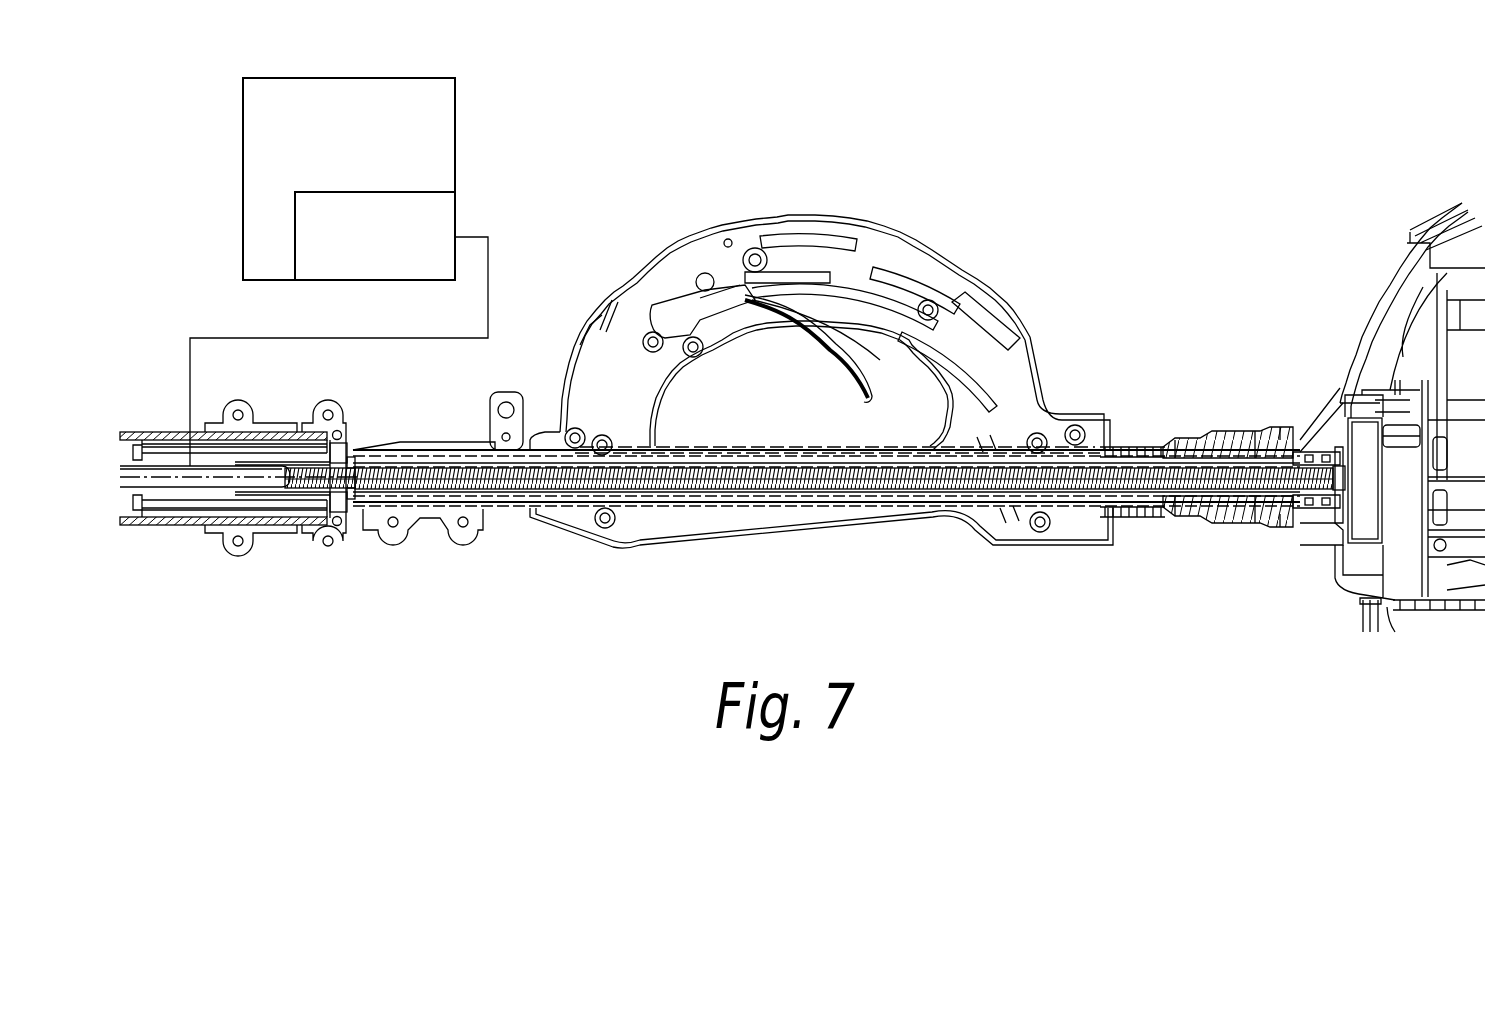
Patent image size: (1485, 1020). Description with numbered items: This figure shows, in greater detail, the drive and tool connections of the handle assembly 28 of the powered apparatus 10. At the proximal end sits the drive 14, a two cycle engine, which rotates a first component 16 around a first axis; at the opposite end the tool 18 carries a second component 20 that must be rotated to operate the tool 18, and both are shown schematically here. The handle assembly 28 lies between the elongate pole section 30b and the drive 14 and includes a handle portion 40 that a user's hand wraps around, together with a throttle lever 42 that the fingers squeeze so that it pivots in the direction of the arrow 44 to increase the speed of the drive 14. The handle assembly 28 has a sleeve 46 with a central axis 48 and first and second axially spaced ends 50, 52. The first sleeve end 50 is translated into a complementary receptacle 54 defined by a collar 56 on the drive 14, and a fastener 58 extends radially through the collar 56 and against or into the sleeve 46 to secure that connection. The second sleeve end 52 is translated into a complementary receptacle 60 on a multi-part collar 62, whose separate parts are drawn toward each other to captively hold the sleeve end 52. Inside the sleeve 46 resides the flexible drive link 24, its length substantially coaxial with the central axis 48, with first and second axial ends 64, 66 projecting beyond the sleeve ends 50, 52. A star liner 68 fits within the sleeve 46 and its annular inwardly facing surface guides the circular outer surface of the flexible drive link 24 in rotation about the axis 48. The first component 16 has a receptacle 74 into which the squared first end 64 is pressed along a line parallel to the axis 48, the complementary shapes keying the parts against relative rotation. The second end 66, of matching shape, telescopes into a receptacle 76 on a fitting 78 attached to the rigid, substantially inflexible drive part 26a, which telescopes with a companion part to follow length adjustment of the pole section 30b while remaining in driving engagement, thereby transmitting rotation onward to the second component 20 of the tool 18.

The powered apparatus 10 is at (986, 168).
The drive 14 is at (1436, 202).
The first component 16 is at (1306, 457).
The tool 18 is at (431, 129).
The second component 20 is at (443, 230).
The flexible drive link 24 is at (780, 494).
The drive part 26a is at (272, 490).
The handle assembly 28 is at (760, 190).
The elongate pole section 30b is at (160, 431).
The handle portion 40 is at (832, 222).
The throttle lever 42 is at (856, 338).
The arrow 44 is at (830, 333).
The sleeve 46 is at (1180, 512).
The central axis 48 is at (897, 494).
The first sleeve end 50 is at (1212, 500).
The second sleeve end 52 is at (362, 462).
The receptacle 54 is at (1215, 460).
The collar 56 is at (1265, 422).
The fastener 58 is at (1180, 436).
The receptacle 60 is at (437, 458).
The multi-part collar 62 is at (353, 540).
The first axial end 64 is at (1284, 458).
The second axial end 66 is at (357, 462).
The star liner 68 is at (663, 490).
The receptacle 74 is at (1272, 497).
The receptacle 76 is at (312, 490).
The fitting 78 is at (294, 466).